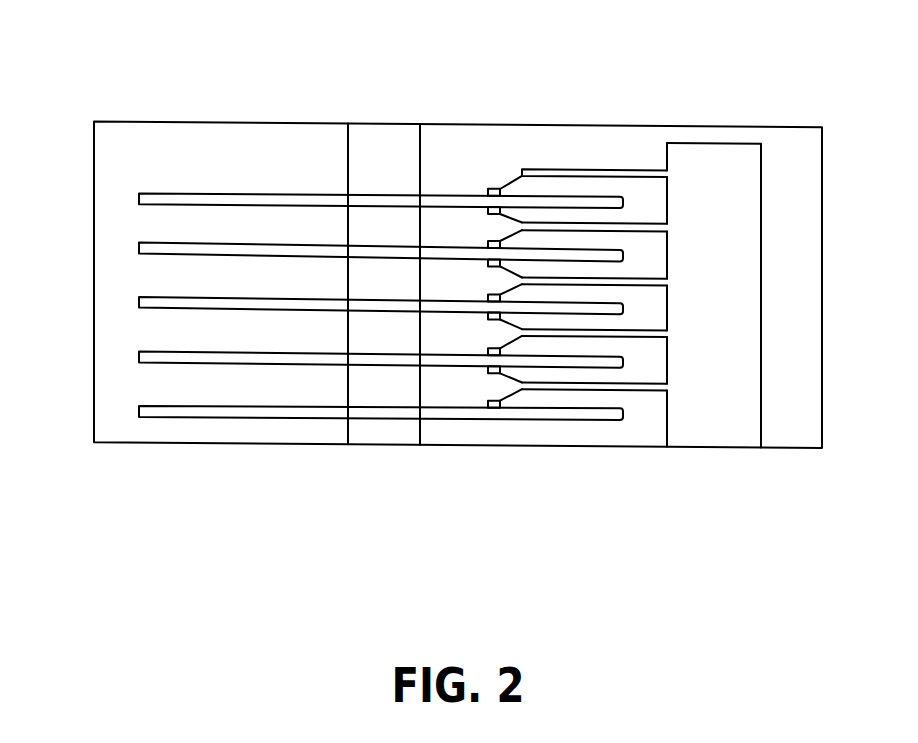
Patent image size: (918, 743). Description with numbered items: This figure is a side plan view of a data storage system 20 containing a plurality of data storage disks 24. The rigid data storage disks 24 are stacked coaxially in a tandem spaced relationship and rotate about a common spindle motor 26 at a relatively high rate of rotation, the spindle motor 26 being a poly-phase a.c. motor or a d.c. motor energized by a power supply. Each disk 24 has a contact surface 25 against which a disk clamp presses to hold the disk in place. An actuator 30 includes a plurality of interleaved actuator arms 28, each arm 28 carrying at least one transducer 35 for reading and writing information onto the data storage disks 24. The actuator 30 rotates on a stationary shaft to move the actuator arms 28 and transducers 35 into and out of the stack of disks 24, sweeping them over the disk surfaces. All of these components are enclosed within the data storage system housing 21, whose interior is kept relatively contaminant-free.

The data storage system 20 is at (720, 101).
The data storage system housing 21 is at (823, 328).
The data storage disk 24 is at (139, 196).
The contact surface 25 is at (502, 185).
The spindle motor 26 is at (375, 435).
The actuator arm 28 is at (573, 170).
The actuator 30 is at (711, 422).
The transducer 35 is at (488, 188).